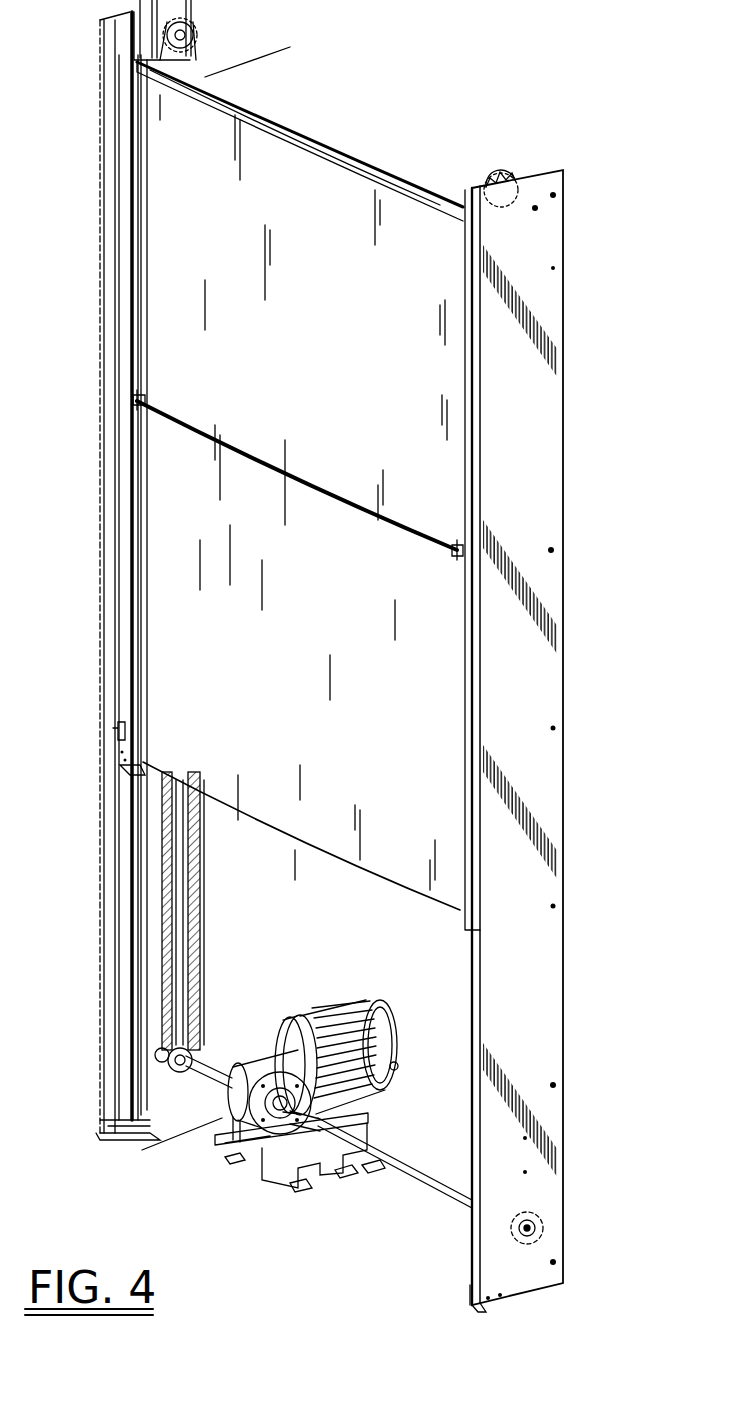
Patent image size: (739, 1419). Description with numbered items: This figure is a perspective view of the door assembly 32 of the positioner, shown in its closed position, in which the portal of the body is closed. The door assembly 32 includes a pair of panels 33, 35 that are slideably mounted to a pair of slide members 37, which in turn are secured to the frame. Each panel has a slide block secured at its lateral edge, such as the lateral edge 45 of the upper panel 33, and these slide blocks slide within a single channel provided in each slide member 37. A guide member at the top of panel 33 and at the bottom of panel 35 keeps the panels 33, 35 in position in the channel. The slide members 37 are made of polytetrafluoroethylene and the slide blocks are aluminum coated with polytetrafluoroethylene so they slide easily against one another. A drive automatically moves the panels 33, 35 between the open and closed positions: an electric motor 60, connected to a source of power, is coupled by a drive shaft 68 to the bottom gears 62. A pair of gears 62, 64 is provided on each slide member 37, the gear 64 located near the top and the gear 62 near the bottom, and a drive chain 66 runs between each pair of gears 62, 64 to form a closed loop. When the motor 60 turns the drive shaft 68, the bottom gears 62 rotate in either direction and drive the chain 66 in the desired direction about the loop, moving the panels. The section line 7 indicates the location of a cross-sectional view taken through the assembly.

The section line 7- 7 is at (264, 66).
The door assembly 32 is at (580, 705).
The panel 33 is at (350, 195).
The panel 35 is at (308, 642).
The slide member 37 is at (104, 44).
The lateral edge 45 is at (118, 748).
The electric motor 60 is at (345, 995).
The gear 62 is at (196, 1056).
The gear 64 is at (196, 28).
The drive chain 66 is at (204, 905).
The drive shaft 68 is at (425, 1180).